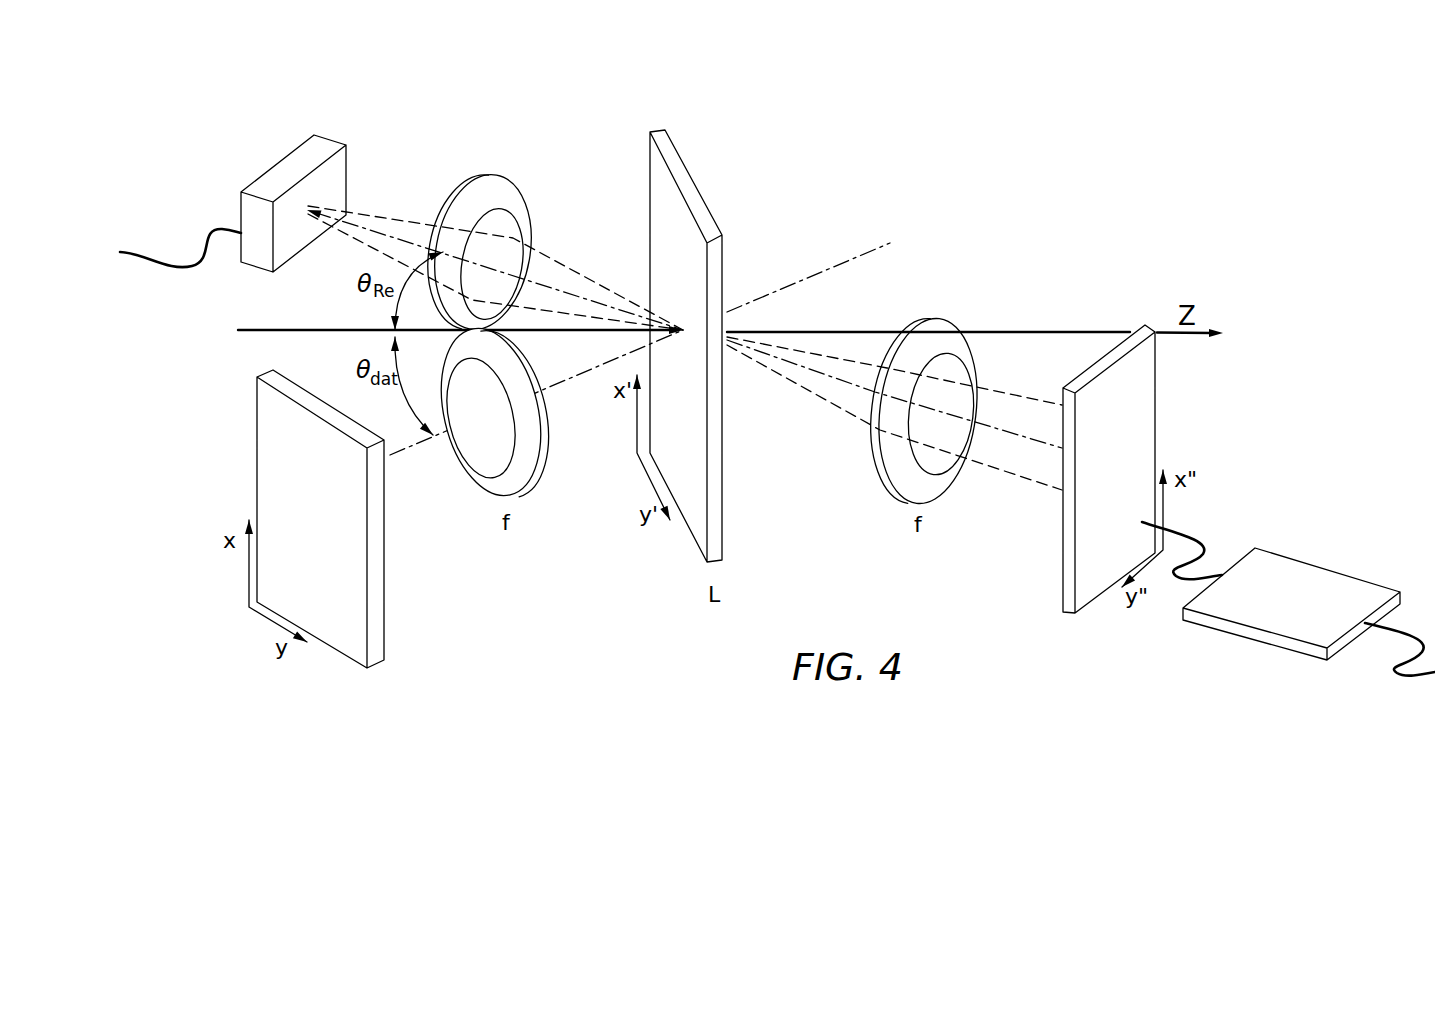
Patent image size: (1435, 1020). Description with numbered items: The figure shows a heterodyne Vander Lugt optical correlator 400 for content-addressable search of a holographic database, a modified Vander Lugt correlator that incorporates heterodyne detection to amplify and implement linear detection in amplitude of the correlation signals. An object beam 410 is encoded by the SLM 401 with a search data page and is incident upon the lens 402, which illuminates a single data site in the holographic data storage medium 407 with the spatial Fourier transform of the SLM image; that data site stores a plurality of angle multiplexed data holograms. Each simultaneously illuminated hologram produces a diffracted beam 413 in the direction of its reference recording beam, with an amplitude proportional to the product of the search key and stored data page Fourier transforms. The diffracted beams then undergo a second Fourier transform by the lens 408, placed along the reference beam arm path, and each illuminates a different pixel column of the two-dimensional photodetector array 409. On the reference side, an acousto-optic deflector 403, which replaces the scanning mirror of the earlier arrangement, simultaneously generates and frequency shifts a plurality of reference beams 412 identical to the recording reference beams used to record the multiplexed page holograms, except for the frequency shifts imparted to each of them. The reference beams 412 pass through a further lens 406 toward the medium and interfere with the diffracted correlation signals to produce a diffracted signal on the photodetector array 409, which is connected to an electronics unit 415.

The optical correlator 400 is at (916, 110).
The SLM 401 is at (257, 443).
The lens 402 is at (540, 485).
The acousto-optic deflector 403 is at (277, 162).
The reference beam lens 406 is at (486, 172).
The holographic data storage medium 407 is at (650, 192).
The lens 408 is at (948, 320).
The two-dimensional photodetector array 409 is at (1157, 395).
The object beam 410 is at (412, 450).
The reference beams 412 is at (373, 230).
The diffracted beam 413 is at (830, 382).
The signal processing unit 415 is at (1328, 567).